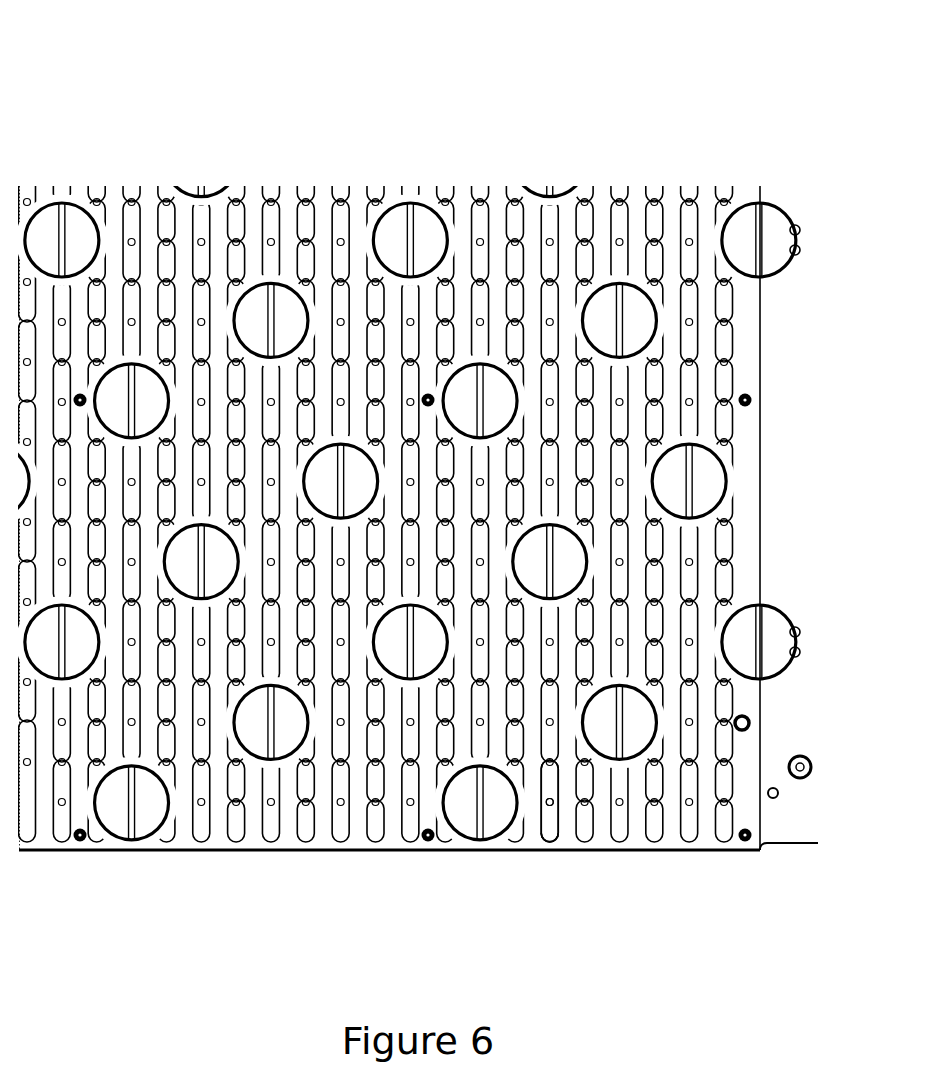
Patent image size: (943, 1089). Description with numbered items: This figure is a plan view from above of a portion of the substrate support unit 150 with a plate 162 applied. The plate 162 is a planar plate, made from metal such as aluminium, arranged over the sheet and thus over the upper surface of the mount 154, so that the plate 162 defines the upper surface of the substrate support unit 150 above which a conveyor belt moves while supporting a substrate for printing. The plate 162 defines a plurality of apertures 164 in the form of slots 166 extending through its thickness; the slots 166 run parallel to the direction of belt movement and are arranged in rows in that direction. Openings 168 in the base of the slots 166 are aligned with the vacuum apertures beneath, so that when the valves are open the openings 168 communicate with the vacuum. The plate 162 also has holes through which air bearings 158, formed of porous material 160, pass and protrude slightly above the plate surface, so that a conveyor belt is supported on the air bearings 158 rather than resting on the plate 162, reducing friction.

The substrate support unit 150 is at (110, 83).
The mount 154 is at (800, 830).
The air bearing 158 is at (464, 815).
The porous material 160 is at (440, 825).
The plate 162 is at (703, 828).
The aperture 164 is at (550, 823).
The slot 166 is at (543, 838).
The opening 168 is at (552, 810).